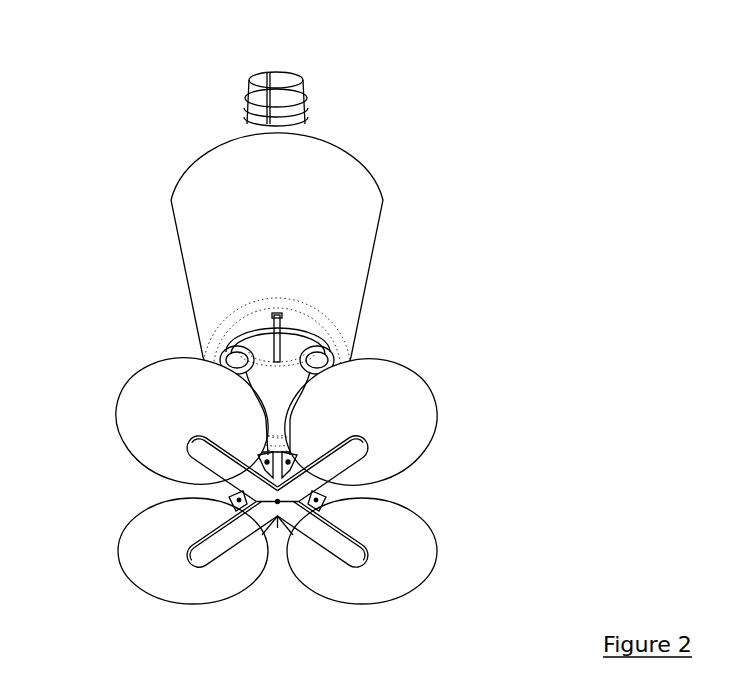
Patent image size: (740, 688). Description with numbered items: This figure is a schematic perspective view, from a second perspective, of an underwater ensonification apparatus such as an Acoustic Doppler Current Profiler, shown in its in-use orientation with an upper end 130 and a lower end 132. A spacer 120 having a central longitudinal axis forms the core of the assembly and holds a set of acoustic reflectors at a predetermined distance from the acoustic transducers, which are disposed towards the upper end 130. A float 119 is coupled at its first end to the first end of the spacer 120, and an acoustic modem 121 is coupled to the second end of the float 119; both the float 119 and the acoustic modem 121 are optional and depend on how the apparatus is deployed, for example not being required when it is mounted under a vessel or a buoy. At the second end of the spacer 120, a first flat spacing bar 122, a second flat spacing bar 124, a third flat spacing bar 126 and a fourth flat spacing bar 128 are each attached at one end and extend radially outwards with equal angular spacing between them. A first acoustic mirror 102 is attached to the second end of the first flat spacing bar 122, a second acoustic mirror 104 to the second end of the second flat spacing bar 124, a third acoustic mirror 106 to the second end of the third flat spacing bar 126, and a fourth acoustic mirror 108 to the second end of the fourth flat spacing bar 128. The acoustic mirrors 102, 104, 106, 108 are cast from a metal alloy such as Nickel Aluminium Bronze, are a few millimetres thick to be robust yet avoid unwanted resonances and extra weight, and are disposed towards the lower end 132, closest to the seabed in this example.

The first acoustic mirror 102 is at (145, 545).
The second acoustic mirror 104 is at (393, 567).
The third acoustic mirror 106 is at (390, 387).
The fourth acoustic mirror 108 is at (145, 380).
The float 119 is at (345, 210).
The spacer 120 is at (287, 373).
The acoustic modem 121 is at (283, 92).
The first flat spacing bar 122 is at (197, 557).
The second flat spacing bar 124 is at (357, 568).
The third flat spacing bar 126 is at (357, 447).
The fourth flat spacing bar 128 is at (200, 448).
The upper end 130 is at (317, 74).
The lower end 132 is at (278, 592).